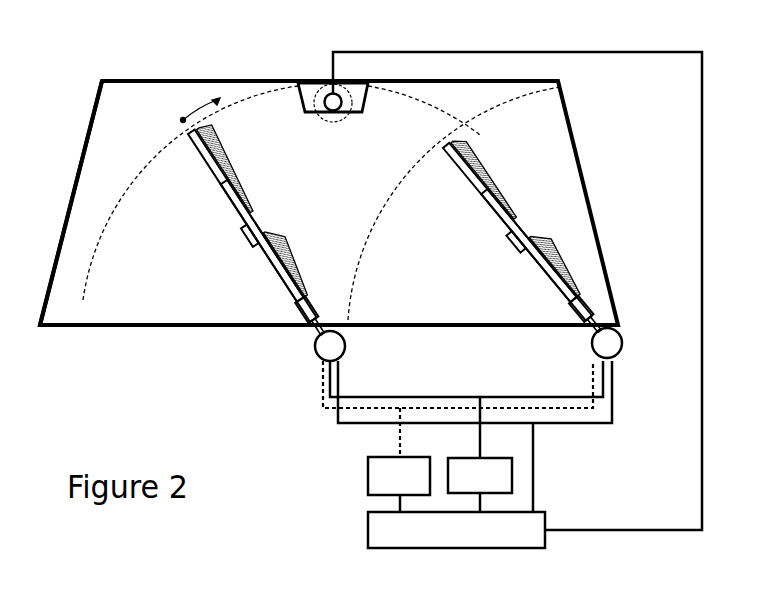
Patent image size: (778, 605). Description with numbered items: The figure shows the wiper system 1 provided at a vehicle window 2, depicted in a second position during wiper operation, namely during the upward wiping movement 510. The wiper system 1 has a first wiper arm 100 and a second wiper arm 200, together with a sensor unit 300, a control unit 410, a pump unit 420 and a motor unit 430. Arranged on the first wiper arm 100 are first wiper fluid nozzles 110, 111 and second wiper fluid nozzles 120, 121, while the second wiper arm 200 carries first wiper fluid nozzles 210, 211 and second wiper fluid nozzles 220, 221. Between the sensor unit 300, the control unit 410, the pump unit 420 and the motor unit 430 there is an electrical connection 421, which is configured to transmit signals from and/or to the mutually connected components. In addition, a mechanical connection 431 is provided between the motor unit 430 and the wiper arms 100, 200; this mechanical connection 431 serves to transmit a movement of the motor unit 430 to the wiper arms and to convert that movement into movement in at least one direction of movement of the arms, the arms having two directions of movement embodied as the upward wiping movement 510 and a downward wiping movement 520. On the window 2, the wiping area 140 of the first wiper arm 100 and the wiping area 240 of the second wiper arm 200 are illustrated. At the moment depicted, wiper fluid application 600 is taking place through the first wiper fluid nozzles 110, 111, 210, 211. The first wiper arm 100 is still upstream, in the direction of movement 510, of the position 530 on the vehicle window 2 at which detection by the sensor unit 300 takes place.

The wiper system 1 is at (618, 137).
The vehicle window 2 is at (101, 80).
The downward wiping movement 520 is at (112, 113).
The sensor unit 300 is at (326, 97).
The position 530 is at (343, 117).
The wiping area 140 is at (222, 104).
The wiping area 240 is at (370, 245).
The upward wiping movement 510 is at (195, 112).
The first wiper arm 100 is at (188, 137).
The first wiper fluid nozzle 110 is at (267, 222).
The second wiper fluid nozzle 120 is at (242, 235).
The first wiper fluid nozzle 111 is at (314, 318).
The second wiper fluid nozzle 121 is at (285, 327).
The second wiper arm 200 is at (473, 155).
The first wiper fluid nozzle 210 is at (526, 233).
The second wiper fluid nozzle 220 is at (510, 246).
The first wiper fluid nozzle 211 is at (585, 308).
The second wiper fluid nozzle 221 is at (574, 320).
The wiper fluid application 600 is at (238, 172).
The control unit 410 is at (405, 535).
The pump unit 420 is at (483, 477).
The electrical connection 421 is at (483, 442).
The motor unit 430 is at (400, 475).
The mechanical connection 431 is at (400, 437).